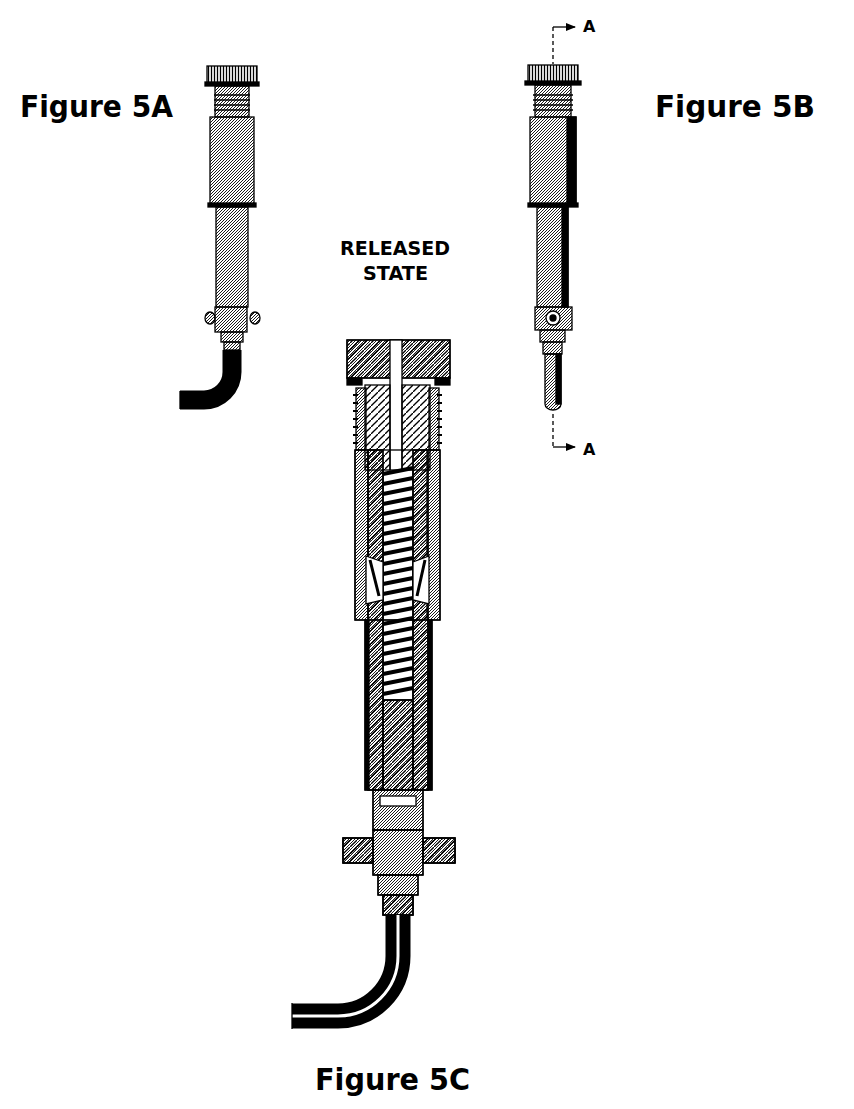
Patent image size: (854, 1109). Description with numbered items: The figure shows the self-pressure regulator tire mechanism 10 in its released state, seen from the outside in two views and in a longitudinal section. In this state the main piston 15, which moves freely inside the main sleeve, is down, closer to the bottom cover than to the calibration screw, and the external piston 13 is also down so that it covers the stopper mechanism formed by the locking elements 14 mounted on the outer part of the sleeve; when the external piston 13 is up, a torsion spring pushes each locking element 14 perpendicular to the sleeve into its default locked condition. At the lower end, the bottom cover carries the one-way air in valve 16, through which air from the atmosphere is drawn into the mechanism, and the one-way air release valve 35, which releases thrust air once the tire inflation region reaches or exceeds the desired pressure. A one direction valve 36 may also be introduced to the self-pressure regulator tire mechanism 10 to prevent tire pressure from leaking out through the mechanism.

In FIG. 5A, the self-pressure regulator tire mechanism 10 is at (190, 195).
In FIG. 5B, the self-pressure regulator tire mechanism 10 is at (512, 182).
In FIG. 5C, the self-pressure regulator tire mechanism 10 is at (462, 600).
In FIG. 5C, the external piston 13 is at (355, 552).
In FIG. 5C, the locking element 14 is at (355, 613).
In FIG. 5C, the main piston 15 is at (370, 763).
In FIG. 5C, the one-way air in valve 16 is at (343, 852).
In FIG. 5C, the one-way air release valve 35 is at (455, 843).
In FIG. 5C, the one direction valve 36 is at (403, 906).